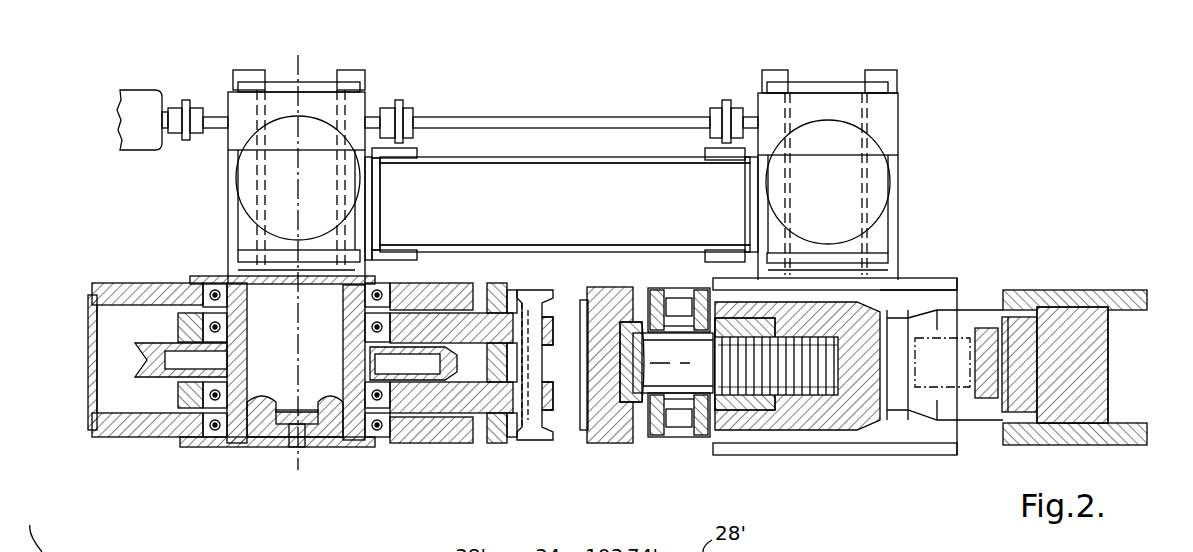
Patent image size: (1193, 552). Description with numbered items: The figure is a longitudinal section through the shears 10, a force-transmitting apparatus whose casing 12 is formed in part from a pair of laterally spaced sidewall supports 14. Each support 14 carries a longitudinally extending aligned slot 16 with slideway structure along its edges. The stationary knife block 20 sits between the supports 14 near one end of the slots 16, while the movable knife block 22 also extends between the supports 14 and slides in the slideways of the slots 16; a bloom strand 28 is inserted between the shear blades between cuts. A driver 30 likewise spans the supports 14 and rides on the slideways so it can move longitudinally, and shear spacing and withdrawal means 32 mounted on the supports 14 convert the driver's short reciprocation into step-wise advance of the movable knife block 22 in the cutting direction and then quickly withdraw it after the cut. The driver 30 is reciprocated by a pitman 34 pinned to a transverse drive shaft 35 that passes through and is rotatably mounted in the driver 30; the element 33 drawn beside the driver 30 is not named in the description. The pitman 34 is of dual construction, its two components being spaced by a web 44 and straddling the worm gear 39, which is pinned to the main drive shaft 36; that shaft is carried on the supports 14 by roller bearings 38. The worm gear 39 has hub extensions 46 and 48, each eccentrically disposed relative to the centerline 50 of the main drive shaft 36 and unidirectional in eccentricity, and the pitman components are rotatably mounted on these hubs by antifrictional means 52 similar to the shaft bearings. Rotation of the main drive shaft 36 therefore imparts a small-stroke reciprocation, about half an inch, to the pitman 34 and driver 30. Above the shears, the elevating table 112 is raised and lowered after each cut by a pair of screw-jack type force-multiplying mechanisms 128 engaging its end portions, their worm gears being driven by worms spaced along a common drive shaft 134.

The shears 10 is at (140, 230).
The casing 12 is at (88, 313).
The sidewall supports 14 is at (1018, 290).
The slots 16 is at (1003, 302).
The stationary knife block 20 is at (1110, 370).
The movable knife block 22 is at (835, 432).
The bloom strand 28 is at (948, 337).
The driver 30 is at (608, 443).
The shear spacing and withdrawal means 32 is at (607, 273).
The plate 33 is at (497, 448).
The pitman 34 is at (442, 283).
The transverse drive shaft 35 is at (563, 438).
The main drive shaft 36 is at (407, 290).
The roller bearings 38 is at (203, 283).
The worm gear 39 is at (135, 358).
The web 44 is at (513, 283).
The hub extension 46 is at (232, 280).
The hub extension 48 is at (250, 432).
The centerline 50 is at (368, 262).
The antifrictional means 52 is at (207, 327).
The elevating table 112 is at (583, 195).
The force-multiplying mechanism 128 is at (227, 183).
The drive shaft 134 is at (612, 122).